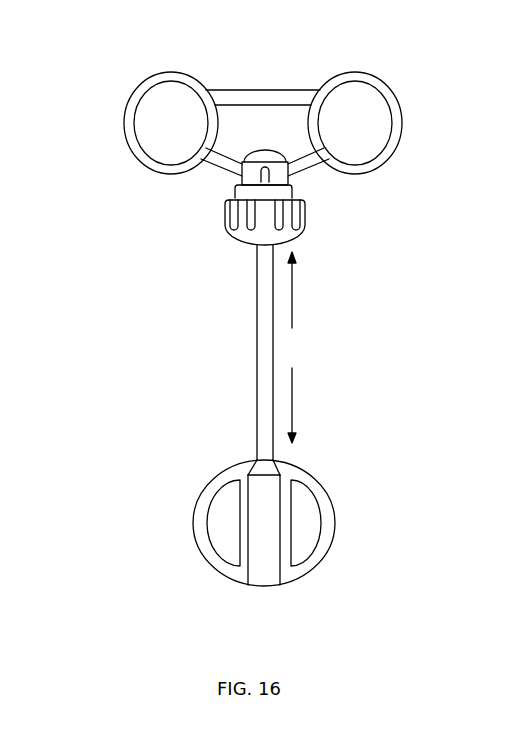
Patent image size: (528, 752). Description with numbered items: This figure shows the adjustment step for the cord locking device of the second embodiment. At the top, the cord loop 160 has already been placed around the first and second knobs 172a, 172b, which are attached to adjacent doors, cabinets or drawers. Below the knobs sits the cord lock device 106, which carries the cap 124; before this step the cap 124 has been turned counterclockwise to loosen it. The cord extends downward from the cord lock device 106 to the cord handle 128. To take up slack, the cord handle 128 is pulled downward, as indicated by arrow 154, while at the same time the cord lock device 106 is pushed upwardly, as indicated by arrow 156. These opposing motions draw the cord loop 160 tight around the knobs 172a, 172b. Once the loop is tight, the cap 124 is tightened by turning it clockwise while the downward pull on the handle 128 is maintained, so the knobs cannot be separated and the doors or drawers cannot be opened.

The cord loop 160 is at (267, 90).
The first knob 172a is at (124, 125).
The second knob 172b is at (402, 120).
The cord lock device 106 is at (225, 201).
The cap 124 is at (305, 215).
The arrow 156 is at (295, 300).
The arrow 154 is at (295, 403).
The cord handle 128 is at (335, 512).